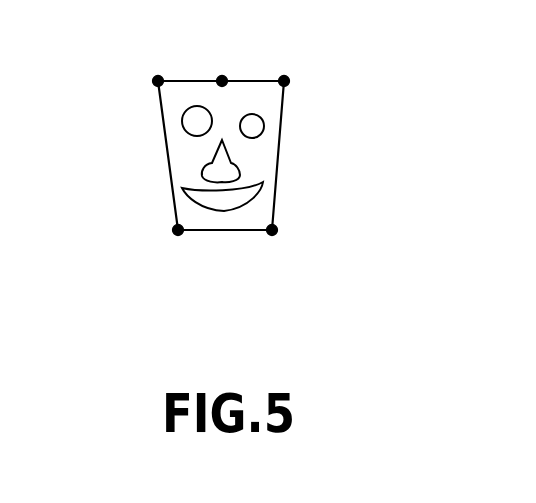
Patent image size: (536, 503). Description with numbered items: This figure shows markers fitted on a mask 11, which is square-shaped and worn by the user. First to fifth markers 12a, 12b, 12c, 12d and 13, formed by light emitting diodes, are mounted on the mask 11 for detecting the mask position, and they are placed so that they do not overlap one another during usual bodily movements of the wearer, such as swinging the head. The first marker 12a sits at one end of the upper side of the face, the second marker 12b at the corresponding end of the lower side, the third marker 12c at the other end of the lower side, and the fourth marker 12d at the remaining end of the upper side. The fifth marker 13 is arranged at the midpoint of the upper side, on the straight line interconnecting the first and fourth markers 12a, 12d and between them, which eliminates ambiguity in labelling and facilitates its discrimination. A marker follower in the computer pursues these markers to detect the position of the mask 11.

The mask 11 is at (177, 128).
The first marker 12a is at (284, 81).
The second marker 12b is at (272, 230).
The third marker 12c is at (178, 230).
The fourth marker 12d is at (158, 81).
The fifth marker 13 is at (222, 81).